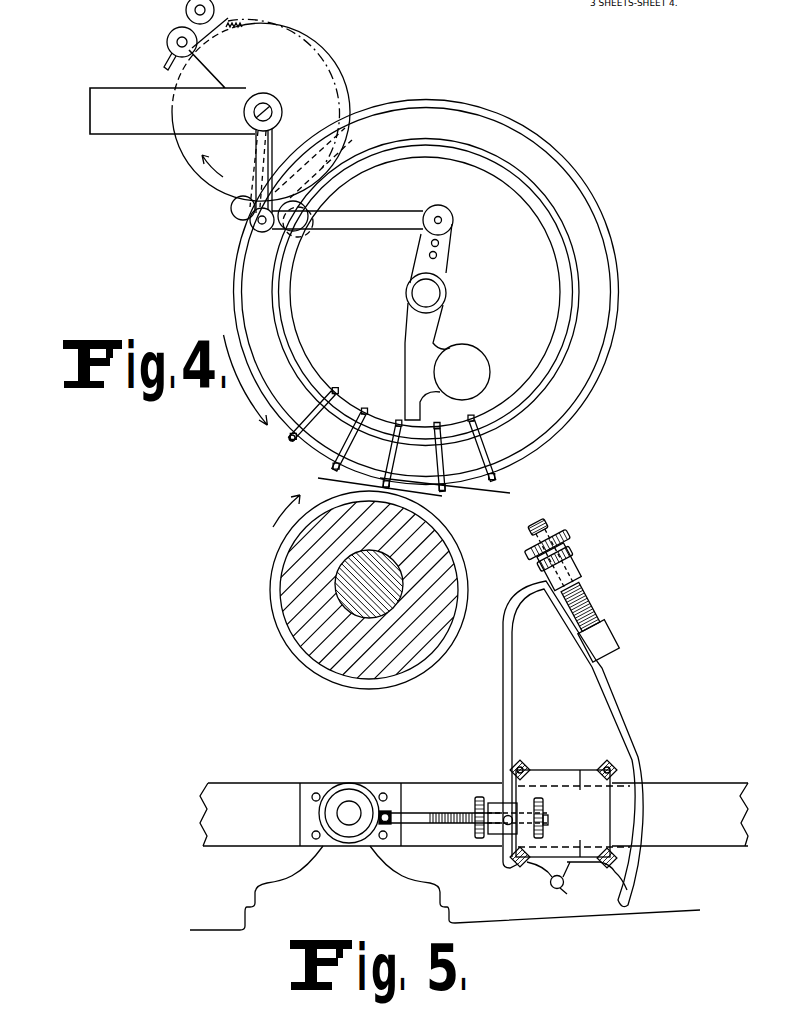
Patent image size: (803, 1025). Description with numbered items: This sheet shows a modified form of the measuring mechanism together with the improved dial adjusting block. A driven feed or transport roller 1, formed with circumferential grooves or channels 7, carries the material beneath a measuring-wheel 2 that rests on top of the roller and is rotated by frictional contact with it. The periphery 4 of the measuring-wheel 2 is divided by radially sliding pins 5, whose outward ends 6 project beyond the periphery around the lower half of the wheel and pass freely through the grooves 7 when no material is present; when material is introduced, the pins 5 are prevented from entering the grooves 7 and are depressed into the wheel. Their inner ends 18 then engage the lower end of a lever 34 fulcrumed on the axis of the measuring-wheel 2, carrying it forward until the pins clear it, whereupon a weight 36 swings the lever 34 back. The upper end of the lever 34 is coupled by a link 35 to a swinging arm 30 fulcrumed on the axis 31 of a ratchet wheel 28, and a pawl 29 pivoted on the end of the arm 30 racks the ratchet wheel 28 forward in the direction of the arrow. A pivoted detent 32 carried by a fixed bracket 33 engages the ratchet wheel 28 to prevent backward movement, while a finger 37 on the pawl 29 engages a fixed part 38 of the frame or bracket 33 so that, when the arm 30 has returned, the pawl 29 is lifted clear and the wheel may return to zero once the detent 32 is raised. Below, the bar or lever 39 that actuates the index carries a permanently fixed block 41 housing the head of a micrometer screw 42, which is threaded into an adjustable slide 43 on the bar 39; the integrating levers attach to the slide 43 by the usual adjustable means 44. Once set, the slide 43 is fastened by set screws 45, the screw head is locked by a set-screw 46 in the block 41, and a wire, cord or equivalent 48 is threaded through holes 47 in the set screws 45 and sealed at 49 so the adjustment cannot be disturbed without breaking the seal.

In FIG. 4, the feed or transport roller 1 is at (298, 597).
In FIG. 4, the measuring-wheel 2 is at (570, 401).
In FIG. 4, the periphery 4 is at (556, 437).
In FIG. 4, the pins 5 is at (389, 457).
In FIG. 4, the outward ends 6 is at (333, 467).
In FIG. 4, the circumferential grooves or channels 7 is at (318, 670).
In FIG. 4, the inner ends 18 is at (367, 410).
In FIG. 4, the ratchet wheel 28 is at (338, 58).
In FIG. 4, the pawl 29 is at (243, 214).
In FIG. 4, the swinging arm 30 is at (265, 152).
In FIG. 4, the axis 31 is at (273, 106).
In FIG. 4, the pivoted detent 32 is at (207, 25).
In FIG. 4, the fixed bracket 33 is at (172, 92).
In FIG. 4, the lever 34 is at (417, 326).
In FIG. 4, the link 35 is at (370, 221).
In FIG. 4, the weight 36 is at (462, 372).
In FIG. 4, the finger 37 is at (230, 201).
In FIG. 4, the fixed part 38 is at (289, 183).
In FIG. 5, the bar or lever 39 is at (238, 793).
In FIG. 5, the fixed block 41 is at (380, 786).
In FIG. 5, the micrometer screw 42 is at (419, 818).
In FIG. 5, the adjustable slide 43 is at (573, 744).
In FIG. 5, the adjustable means 44 is at (587, 611).
In FIG. 5, the set screws 45 is at (604, 763).
In FIG. 5, the set-screw 46 is at (392, 827).
In FIG. 5, the holes 47 is at (514, 765).
In FIG. 5, the wire, cord or equivalent 48 is at (612, 805).
In FIG. 5, the seal 49 is at (553, 887).